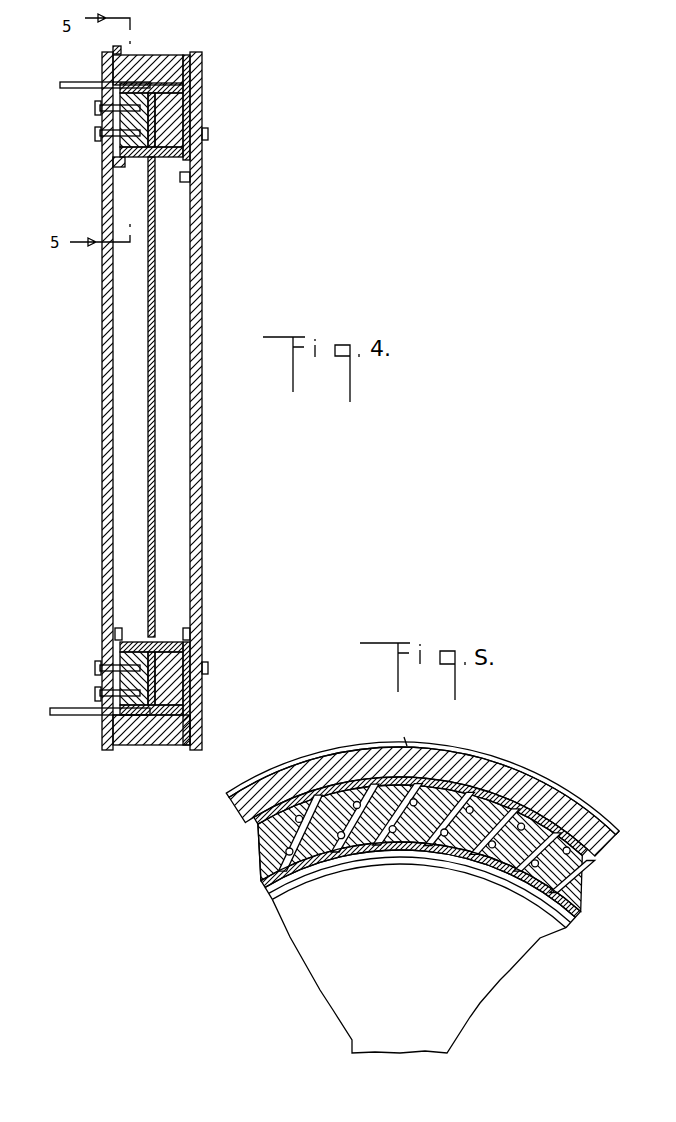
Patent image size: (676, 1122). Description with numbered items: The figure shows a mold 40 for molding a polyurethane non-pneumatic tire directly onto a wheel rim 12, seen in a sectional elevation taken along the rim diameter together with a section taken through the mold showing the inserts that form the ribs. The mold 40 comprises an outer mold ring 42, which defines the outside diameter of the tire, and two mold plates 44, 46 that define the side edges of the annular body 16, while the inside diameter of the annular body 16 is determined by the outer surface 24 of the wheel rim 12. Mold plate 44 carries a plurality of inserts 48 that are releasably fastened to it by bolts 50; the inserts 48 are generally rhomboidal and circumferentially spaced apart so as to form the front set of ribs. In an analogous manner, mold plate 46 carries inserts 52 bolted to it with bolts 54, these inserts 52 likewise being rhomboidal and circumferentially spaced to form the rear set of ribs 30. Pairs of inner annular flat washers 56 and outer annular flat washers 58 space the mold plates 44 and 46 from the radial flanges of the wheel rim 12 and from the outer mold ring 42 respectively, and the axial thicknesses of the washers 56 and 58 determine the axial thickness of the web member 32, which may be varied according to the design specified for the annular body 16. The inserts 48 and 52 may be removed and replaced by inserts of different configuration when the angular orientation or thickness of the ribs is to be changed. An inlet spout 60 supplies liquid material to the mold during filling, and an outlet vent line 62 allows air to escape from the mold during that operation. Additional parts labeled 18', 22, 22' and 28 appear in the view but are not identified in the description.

In FIG. 4, the wheel rim 12 is at (155, 215).
In FIG. 4, the annular body 16 is at (168, 88).
In FIG. 5, the annular body 16 is at (445, 780).
In FIG. 4, the liner 18' is at (179, 389).
In FIG. 5, the liner 18' is at (603, 797).
In FIG. 4, the annular plate 22 is at (111, 397).
In FIG. 5, the annular plate 22' is at (398, 879).
In FIG. 4, the outer surface 24 is at (122, 165).
In FIG. 5, the outer surface 24 is at (492, 878).
In FIG. 5, the pins 28 is at (258, 842).
In FIG. 4, the rear set of ribs 30 is at (140, 100).
In FIG. 5, the rear set of ribs 30 is at (420, 848).
In FIG. 4, the web member 32 is at (170, 112).
In FIG. 4, the mold 40 is at (204, 44).
In FIG. 5, the mold 40 is at (548, 756).
In FIG. 4, the outer mold ring 42 is at (160, 55).
In FIG. 5, the outer mold ring 42 is at (306, 768).
In FIG. 4, the mold plate 44 is at (110, 300).
In FIG. 5, the mold plate 44 is at (345, 978).
In FIG. 4, the mold plate 46 is at (202, 288).
In FIG. 4, the inserts 48 is at (112, 93).
In FIG. 5, the inserts 48 is at (366, 778).
In FIG. 4, the bolts 50 is at (97, 133).
In FIG. 5, the bolts 50 is at (250, 832).
In FIG. 4, the inserts 52 is at (156, 125).
In FIG. 4, the bolts 54 is at (165, 140).
In FIG. 4, the inner annular flat washers 56 is at (190, 184).
In FIG. 4, the outer annular flat washers 58 is at (118, 46).
In FIG. 4, the inlet spout 60 is at (58, 718).
In FIG. 4, the outlet vent line 62 is at (85, 80).
In FIG. 5, the outlet vent line 62 is at (393, 729).